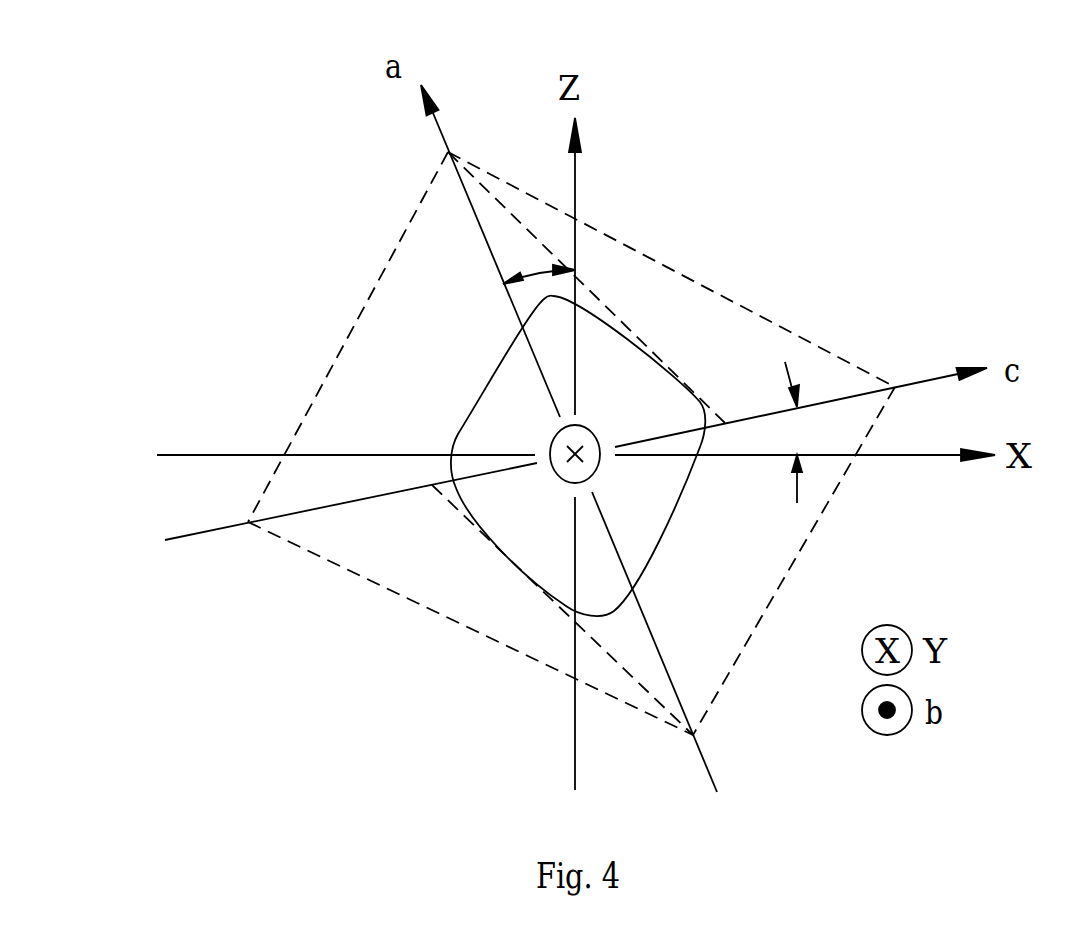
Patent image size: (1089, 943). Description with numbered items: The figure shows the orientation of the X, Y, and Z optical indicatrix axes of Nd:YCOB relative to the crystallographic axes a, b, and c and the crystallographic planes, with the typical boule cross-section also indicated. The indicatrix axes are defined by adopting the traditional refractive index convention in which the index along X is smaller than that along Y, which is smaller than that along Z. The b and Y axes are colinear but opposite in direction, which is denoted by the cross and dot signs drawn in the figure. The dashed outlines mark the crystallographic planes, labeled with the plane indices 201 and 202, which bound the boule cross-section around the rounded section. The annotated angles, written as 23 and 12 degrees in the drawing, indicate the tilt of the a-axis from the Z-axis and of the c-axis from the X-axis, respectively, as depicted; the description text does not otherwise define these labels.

The (20-1) crystal plane 201 is at (238, 253).
The (202) crystal plane 202 is at (671, 443).
The 23 degree angle between a-axis and Z-axis 23 is at (505, 283).
The 12 degree angle between c-axis and X-axis 12 is at (803, 432).